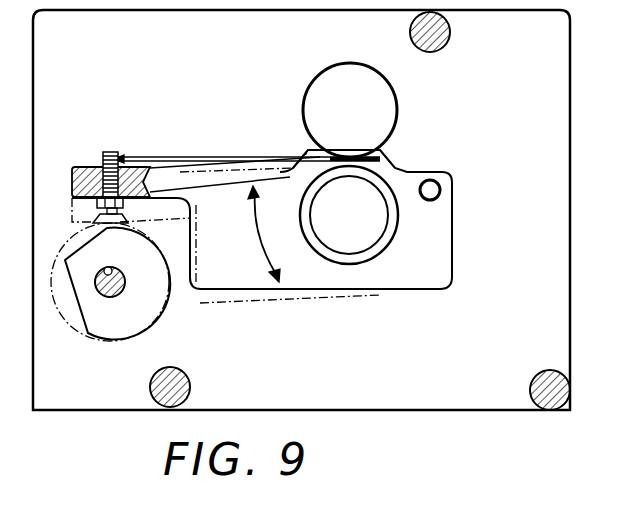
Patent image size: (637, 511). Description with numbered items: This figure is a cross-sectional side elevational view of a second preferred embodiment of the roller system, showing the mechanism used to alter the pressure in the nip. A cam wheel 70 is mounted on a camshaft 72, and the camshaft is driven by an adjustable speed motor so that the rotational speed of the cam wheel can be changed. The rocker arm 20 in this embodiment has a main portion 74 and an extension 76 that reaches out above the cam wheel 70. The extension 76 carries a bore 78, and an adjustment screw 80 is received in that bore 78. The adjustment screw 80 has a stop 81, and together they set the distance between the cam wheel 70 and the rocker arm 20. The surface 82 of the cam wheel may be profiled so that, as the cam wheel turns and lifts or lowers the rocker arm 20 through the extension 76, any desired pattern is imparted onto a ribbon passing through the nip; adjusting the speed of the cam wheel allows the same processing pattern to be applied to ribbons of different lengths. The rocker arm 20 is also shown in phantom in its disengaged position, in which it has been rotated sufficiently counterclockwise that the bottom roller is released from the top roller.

The rocker arm 20 is at (322, 300).
The cam wheel 70 is at (148, 318).
The camshaft 72 is at (126, 281).
The main portion 74 is at (248, 283).
The extension 76 is at (160, 177).
The bore 78 is at (83, 167).
The adjustment screw 80 is at (112, 158).
The stop 81 is at (128, 214).
The surface of the cam wheel 82 is at (110, 345).